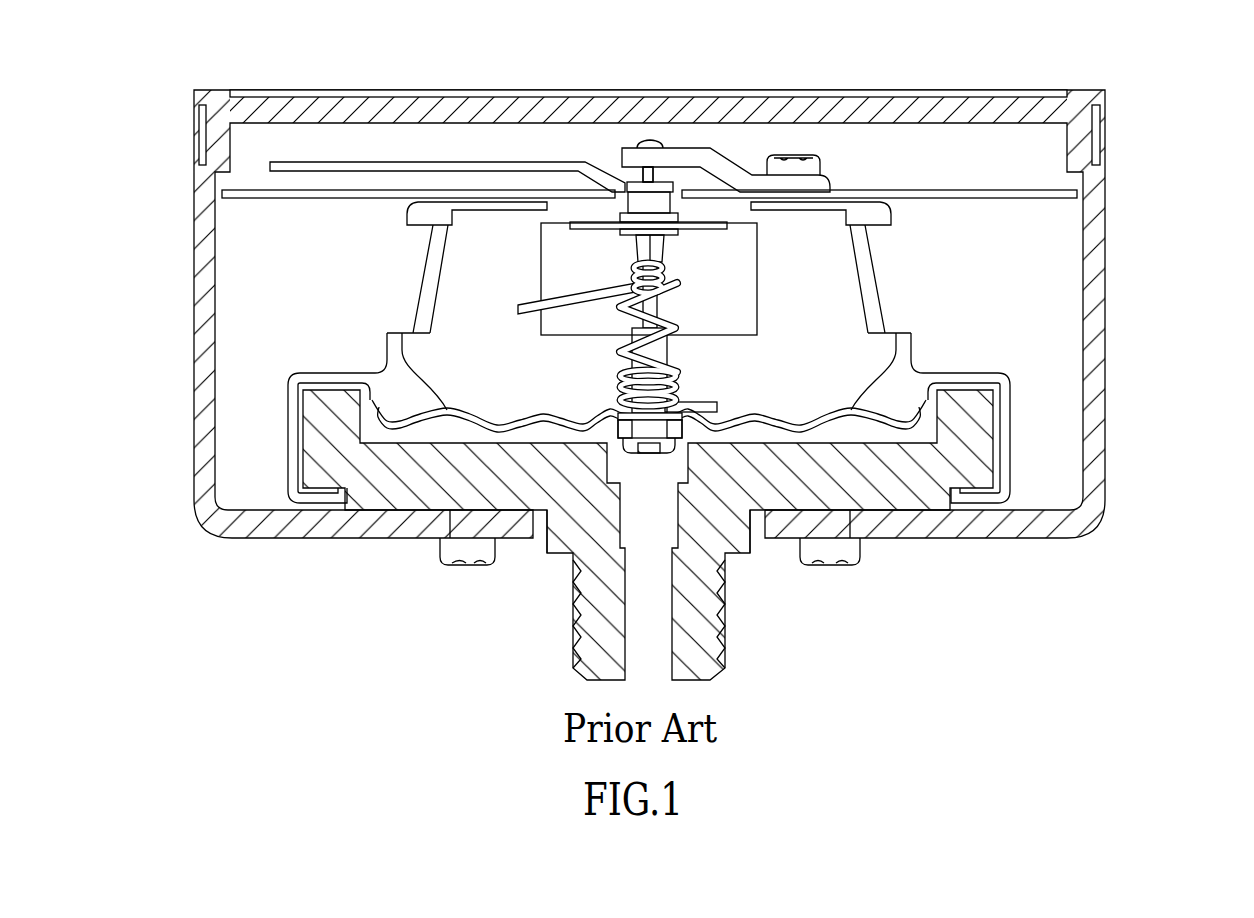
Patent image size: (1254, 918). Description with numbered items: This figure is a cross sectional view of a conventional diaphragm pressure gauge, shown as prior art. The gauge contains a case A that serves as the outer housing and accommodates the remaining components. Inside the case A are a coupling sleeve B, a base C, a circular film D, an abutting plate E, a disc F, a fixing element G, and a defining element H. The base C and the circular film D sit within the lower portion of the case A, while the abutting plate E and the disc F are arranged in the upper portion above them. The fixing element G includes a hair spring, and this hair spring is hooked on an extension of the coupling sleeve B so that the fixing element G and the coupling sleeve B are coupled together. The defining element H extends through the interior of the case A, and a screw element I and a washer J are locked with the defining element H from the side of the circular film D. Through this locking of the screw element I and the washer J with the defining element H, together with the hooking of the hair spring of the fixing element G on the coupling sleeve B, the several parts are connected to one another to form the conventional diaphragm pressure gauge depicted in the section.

The case A is at (1105, 310).
The coupling sleeve B is at (877, 280).
The base C is at (395, 485).
The circular film D is at (405, 355).
The abutting plate E is at (700, 147).
The disc F is at (880, 192).
The fixing element G is at (633, 262).
The defining element H is at (667, 353).
The screw element I is at (667, 448).
The washer J is at (623, 428).